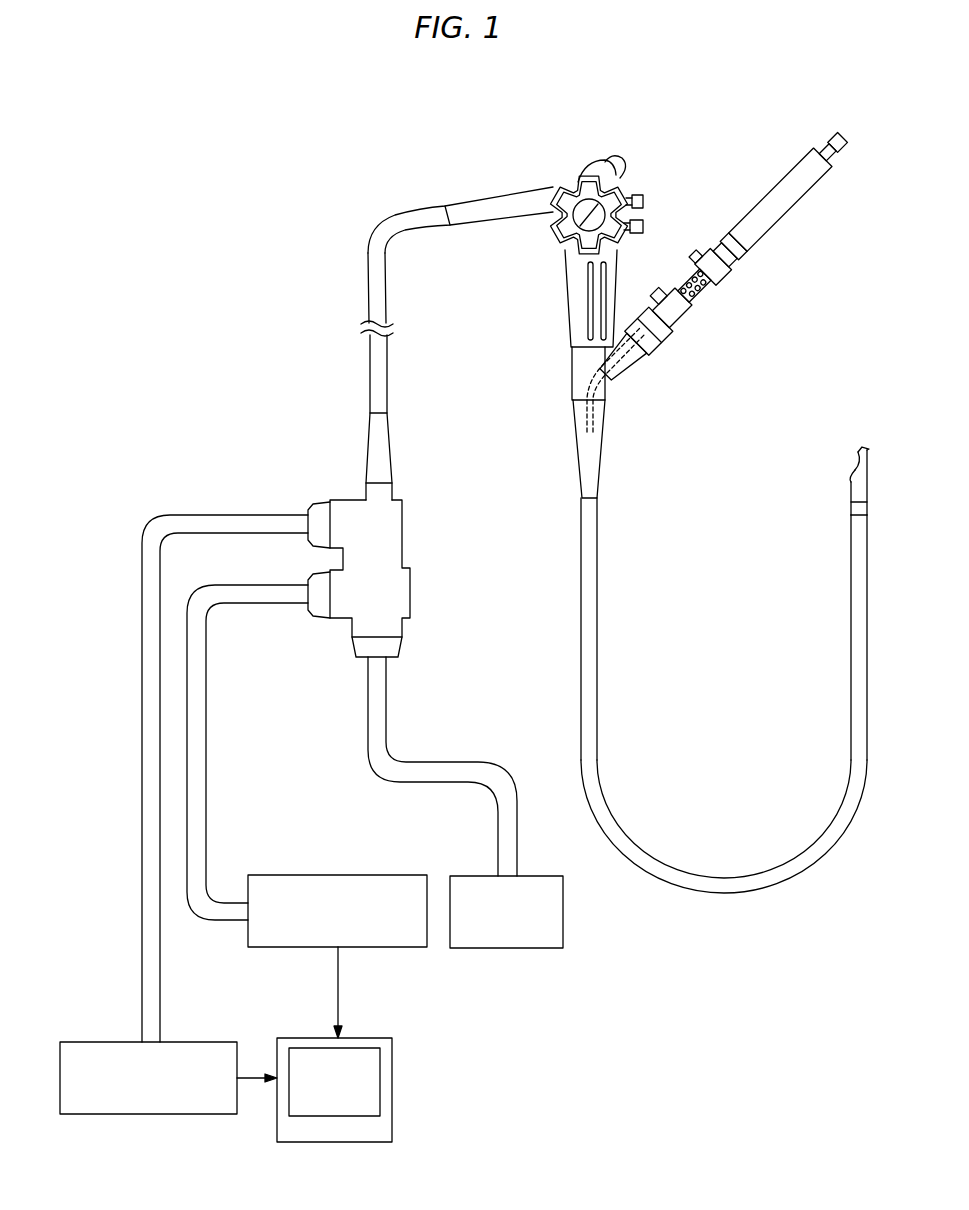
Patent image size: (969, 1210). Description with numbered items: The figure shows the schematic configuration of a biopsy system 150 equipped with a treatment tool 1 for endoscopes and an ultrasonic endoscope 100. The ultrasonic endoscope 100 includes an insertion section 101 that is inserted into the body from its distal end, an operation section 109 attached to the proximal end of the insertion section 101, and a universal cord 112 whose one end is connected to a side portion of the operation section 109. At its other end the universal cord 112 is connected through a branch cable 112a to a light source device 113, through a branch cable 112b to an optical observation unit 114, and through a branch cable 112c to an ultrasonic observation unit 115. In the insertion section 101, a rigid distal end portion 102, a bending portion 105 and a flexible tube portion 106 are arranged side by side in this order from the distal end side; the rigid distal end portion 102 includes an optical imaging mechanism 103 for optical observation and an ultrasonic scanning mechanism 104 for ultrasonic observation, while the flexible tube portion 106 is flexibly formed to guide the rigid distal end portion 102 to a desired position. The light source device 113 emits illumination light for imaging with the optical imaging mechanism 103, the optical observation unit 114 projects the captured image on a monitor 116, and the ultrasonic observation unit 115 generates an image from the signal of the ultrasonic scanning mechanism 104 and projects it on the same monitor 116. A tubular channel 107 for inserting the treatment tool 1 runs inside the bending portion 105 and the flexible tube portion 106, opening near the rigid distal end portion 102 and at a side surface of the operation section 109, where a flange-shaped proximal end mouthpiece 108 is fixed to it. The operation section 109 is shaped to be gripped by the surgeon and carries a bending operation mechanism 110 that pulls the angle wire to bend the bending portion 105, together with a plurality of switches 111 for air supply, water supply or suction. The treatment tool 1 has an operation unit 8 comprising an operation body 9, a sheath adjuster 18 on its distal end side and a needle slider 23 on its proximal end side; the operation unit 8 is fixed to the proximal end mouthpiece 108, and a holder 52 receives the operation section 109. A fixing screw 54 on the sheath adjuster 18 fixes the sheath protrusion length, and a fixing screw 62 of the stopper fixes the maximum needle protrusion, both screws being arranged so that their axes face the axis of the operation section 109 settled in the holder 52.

The biopsy system 150 is at (328, 138).
The ultrasonic endoscope 100 is at (642, 166).
The bending operation mechanism 110 is at (565, 186).
The switches 111 is at (645, 228).
The universal cord 112 is at (378, 222).
The branch cable 112a is at (448, 763).
The branch cable 112b is at (195, 603).
The branch cable 112c is at (155, 528).
The operation section 109 is at (556, 333).
The channel 107 is at (580, 390).
The proximal end mouthpiece 108 is at (632, 380).
The treatment tool 1 is at (730, 200).
The holder 52 is at (622, 314).
The fixing screw 54 is at (653, 296).
The sheath adjuster 18 is at (668, 328).
The operation body 9 is at (698, 283).
The fixing screw 62 is at (702, 253).
The operation unit 8 is at (752, 270).
The needle slider 23 is at (778, 221).
The insertion section 101 is at (708, 427).
The rigid distal end portion 102 is at (756, 412).
The optical imaging mechanism 103 is at (856, 475).
The ultrasonic scanning mechanism 104 is at (860, 450).
The bending portion 105 is at (851, 504).
The flexible tube portion 106 is at (855, 630).
The light source device 113 is at (543, 877).
The optical observation unit 114 is at (360, 875).
The ultrasonic observation unit 115 is at (217, 1042).
The monitor 116 is at (392, 1100).